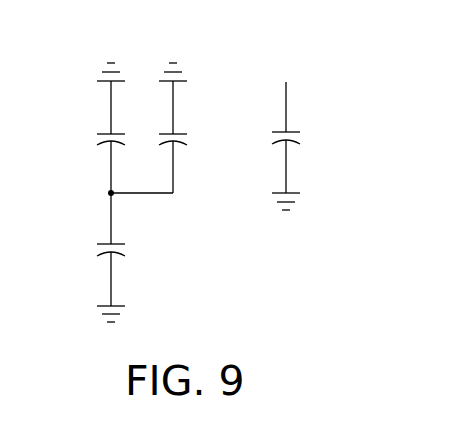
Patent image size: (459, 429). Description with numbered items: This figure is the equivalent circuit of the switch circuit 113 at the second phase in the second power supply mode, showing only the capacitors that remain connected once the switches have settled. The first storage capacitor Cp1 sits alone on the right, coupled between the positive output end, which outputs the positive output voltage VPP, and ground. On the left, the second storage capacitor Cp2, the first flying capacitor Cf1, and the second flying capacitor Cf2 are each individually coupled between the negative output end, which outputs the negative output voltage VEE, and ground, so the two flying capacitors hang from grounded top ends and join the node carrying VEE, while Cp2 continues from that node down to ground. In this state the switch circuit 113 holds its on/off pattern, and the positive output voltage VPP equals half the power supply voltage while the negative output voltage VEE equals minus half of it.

The switch circuit 113 is at (41, 75).
The first flying capacitor Cf1 is at (194, 128).
The second flying capacitor Cf2 is at (90, 128).
The first storage capacitor Cp1 is at (310, 168).
The second storage capacitor Cp2 is at (134, 257).
The positive output voltage VPP is at (287, 94).
The negative output voltage VEE is at (112, 192).